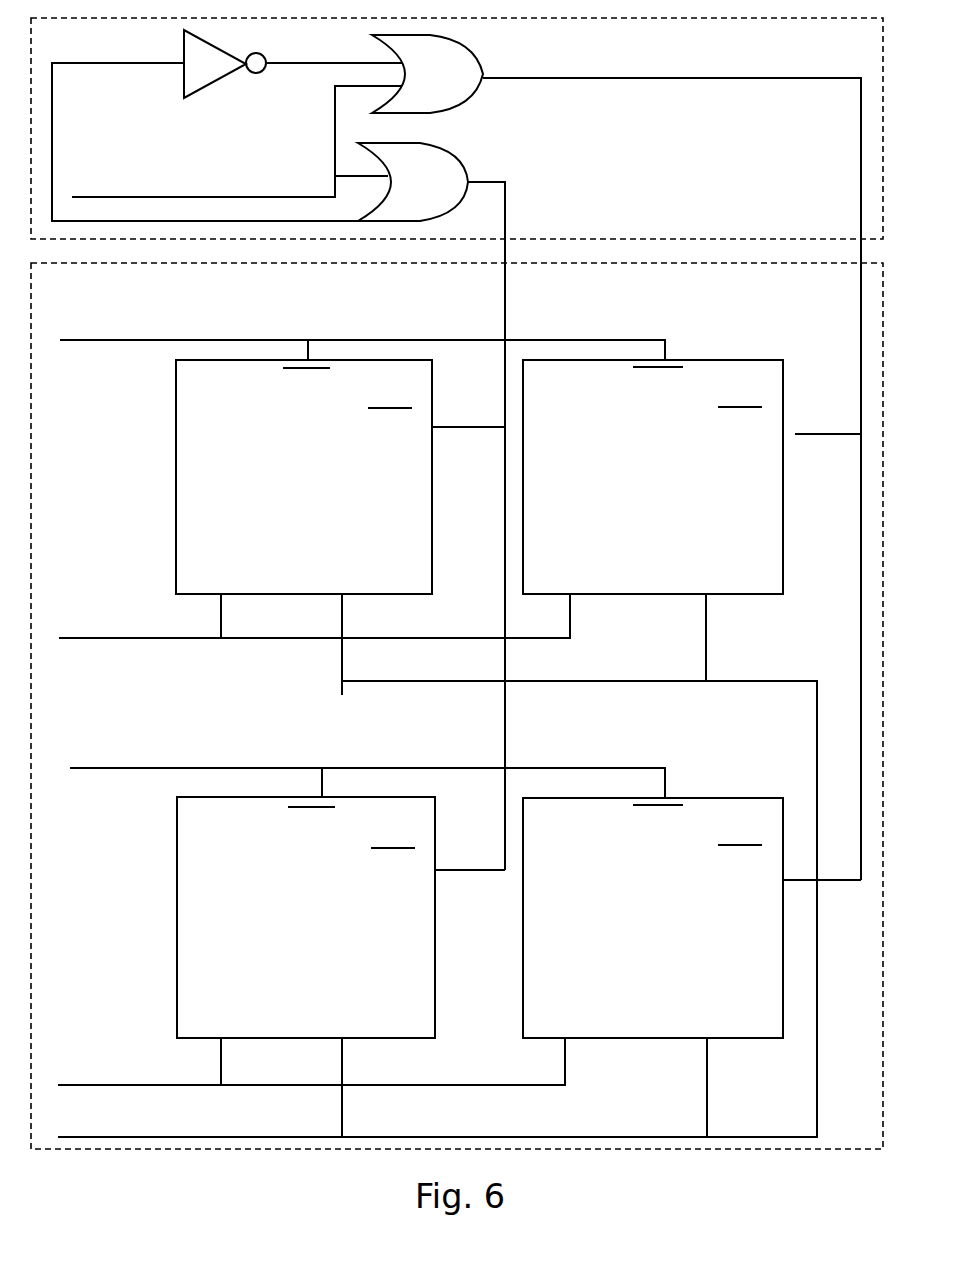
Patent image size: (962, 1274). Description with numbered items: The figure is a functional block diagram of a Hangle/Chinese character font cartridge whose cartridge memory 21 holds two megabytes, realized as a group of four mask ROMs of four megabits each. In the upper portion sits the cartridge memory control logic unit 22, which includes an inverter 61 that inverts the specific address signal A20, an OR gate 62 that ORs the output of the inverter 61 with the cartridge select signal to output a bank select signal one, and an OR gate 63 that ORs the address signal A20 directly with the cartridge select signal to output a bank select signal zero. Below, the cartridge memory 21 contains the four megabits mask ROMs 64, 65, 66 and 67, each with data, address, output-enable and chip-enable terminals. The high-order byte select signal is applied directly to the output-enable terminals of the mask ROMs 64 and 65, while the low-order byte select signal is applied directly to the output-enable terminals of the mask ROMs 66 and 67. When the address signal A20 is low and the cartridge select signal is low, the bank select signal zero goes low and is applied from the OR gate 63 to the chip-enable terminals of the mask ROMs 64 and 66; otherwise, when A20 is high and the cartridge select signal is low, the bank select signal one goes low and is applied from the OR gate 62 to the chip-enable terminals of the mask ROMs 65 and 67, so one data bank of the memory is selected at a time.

The cartridge memory 21 is at (29, 575).
The cartridge memory control logic unit 22 is at (765, 238).
The inverter 61 is at (202, 91).
The OR gate 62 is at (450, 116).
The OR gate 63 is at (503, 162).
The four megabits mask ROM 64 is at (170, 442).
The four megabits mask ROM 65 is at (783, 358).
The four megabits mask ROM 66 is at (175, 936).
The four megabits mask ROM 67 is at (760, 797).